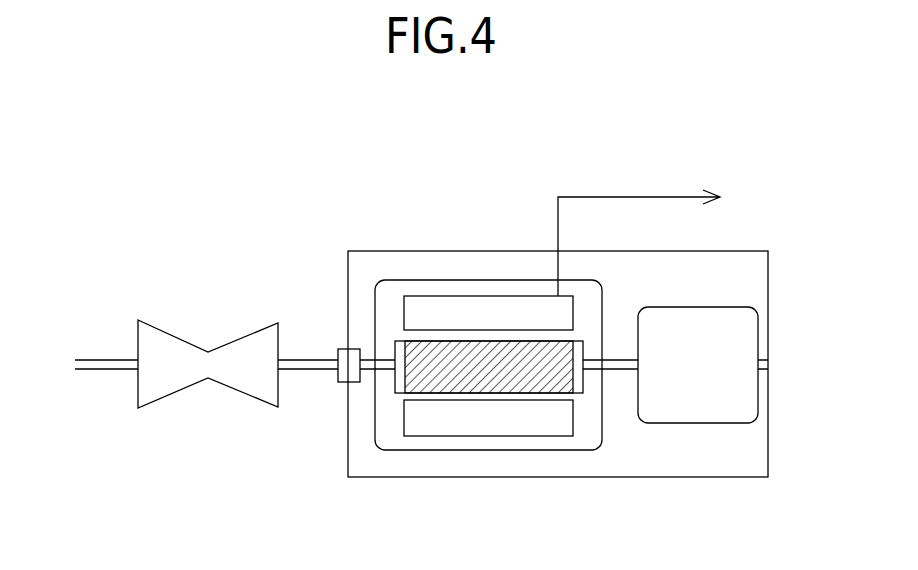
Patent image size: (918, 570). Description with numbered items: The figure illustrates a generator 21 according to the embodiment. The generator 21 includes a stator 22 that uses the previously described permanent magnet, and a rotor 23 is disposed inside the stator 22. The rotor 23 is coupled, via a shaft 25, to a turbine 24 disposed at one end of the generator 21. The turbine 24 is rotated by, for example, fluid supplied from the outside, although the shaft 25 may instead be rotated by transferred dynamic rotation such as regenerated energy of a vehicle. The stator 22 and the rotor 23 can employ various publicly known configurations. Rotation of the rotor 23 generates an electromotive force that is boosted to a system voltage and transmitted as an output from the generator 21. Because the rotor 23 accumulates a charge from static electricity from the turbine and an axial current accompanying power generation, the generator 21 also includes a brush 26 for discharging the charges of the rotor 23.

The generator 21 is at (393, 251).
The stator 22 is at (458, 427).
The rotor 23 is at (502, 382).
The turbine 24 is at (248, 337).
The shaft 25 is at (315, 370).
The brush 26 is at (688, 408).